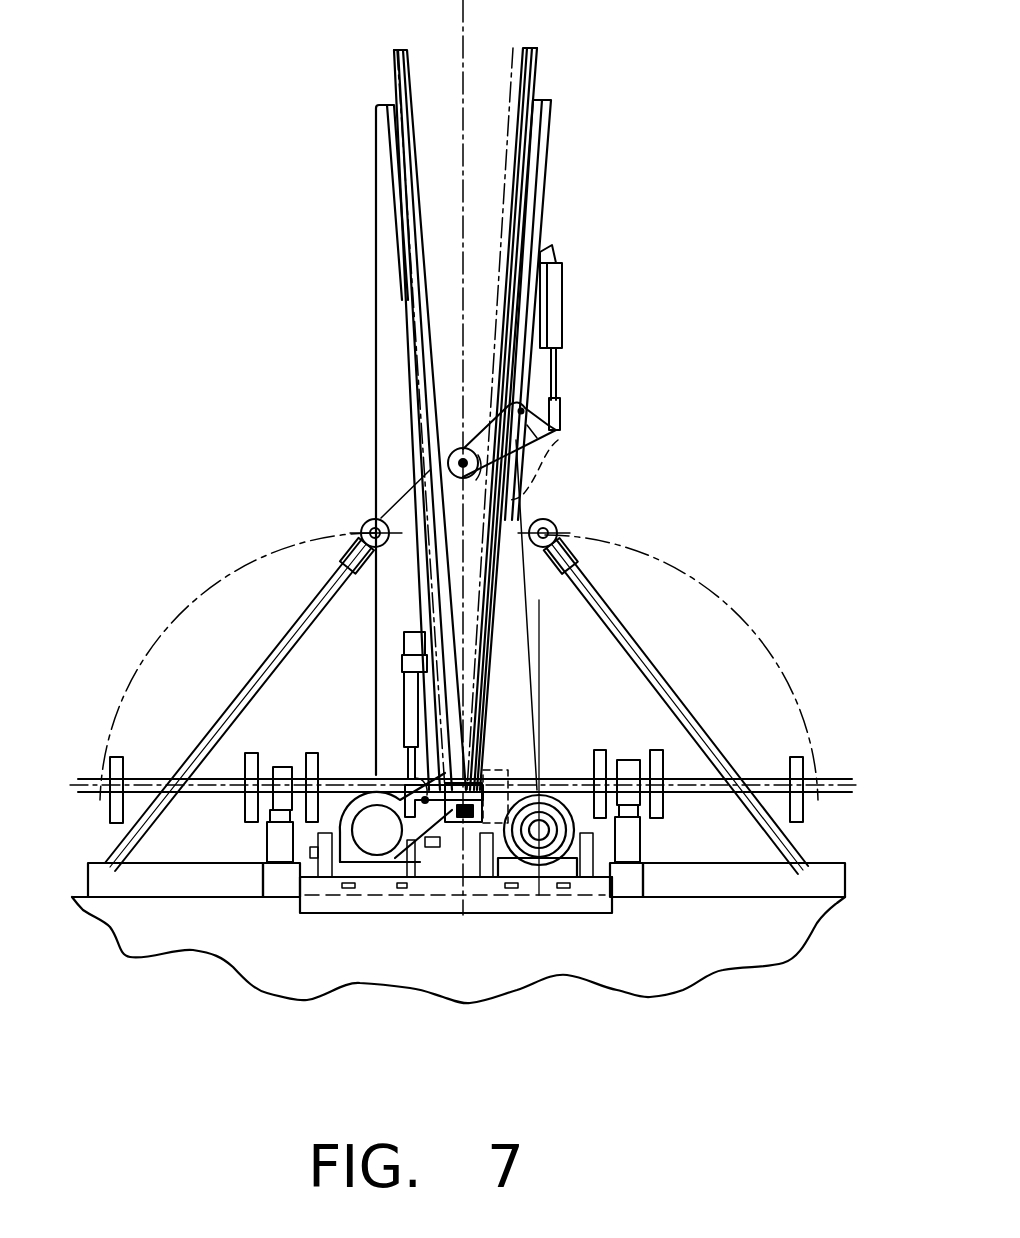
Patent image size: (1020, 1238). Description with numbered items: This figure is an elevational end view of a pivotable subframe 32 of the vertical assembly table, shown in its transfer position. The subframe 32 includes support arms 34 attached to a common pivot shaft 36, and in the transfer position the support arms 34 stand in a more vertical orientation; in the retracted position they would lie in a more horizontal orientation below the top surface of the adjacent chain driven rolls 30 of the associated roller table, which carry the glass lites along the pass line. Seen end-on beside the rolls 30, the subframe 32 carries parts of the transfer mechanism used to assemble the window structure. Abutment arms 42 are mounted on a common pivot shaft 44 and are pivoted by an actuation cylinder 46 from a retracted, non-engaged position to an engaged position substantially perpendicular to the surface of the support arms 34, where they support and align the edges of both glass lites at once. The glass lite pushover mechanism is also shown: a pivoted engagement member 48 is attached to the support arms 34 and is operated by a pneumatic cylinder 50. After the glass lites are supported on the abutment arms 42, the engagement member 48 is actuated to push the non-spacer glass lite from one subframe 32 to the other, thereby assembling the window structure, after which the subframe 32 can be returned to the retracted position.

The chain driven rolls 30 is at (137, 756).
The pivotable subframe 32 is at (262, 452).
The support arms 34 is at (547, 133).
The pivot shaft 36 is at (366, 845).
The abutment arms 42 is at (462, 823).
The pivot shaft 44 is at (408, 750).
The actuation cylinder 46 is at (403, 700).
The engagement member 48 is at (530, 441).
The pneumatic cylinder 50 is at (562, 308).